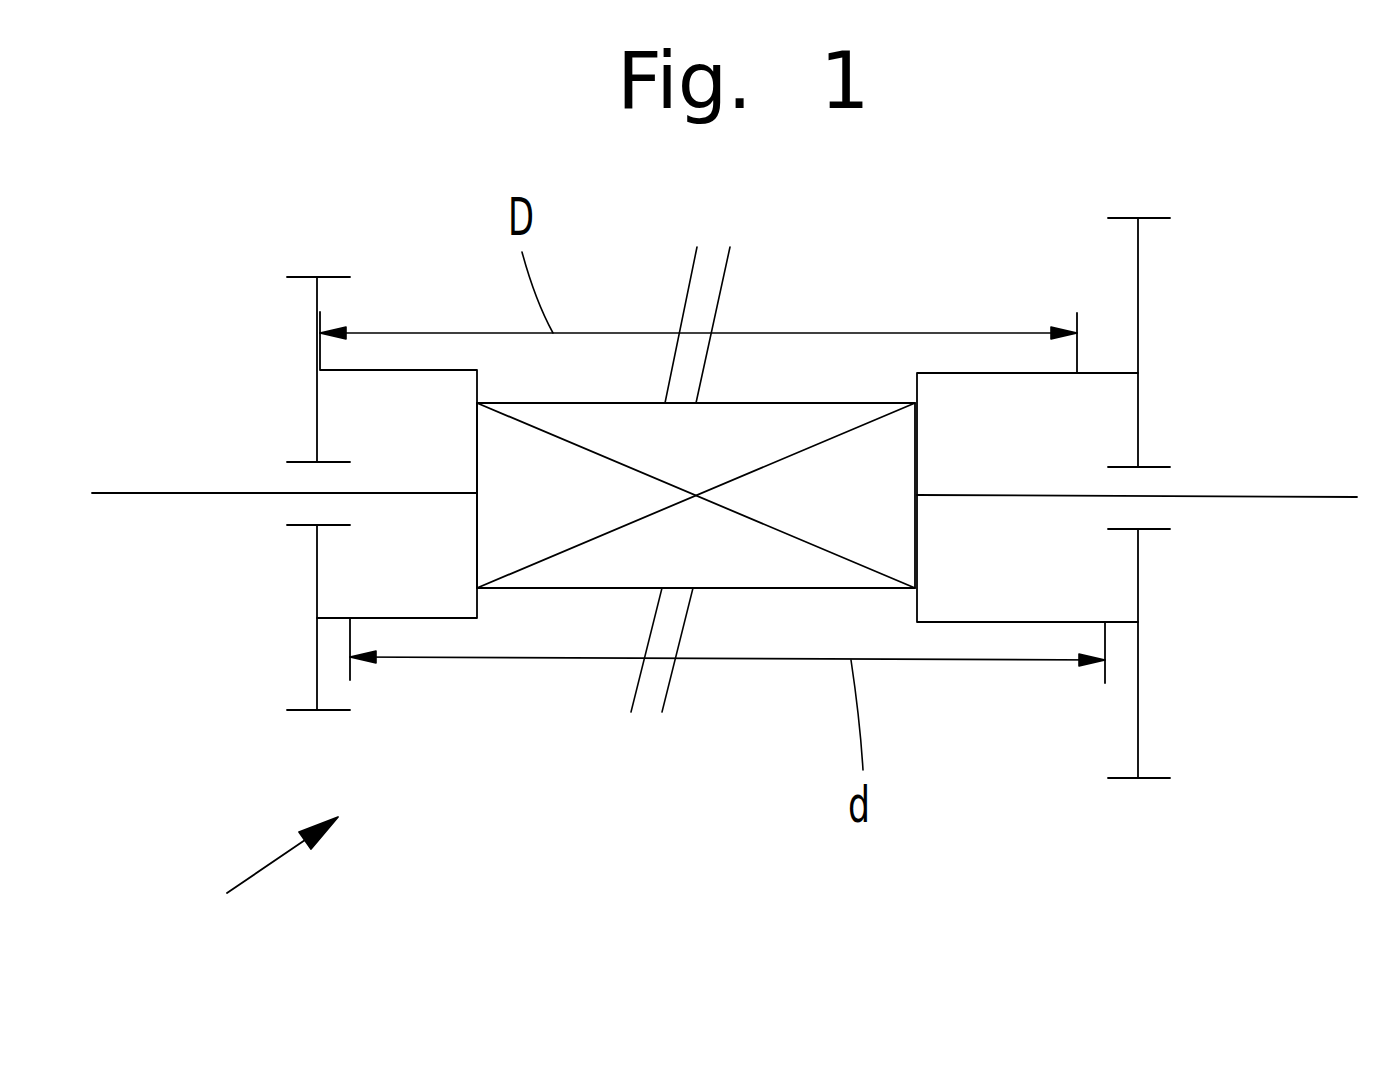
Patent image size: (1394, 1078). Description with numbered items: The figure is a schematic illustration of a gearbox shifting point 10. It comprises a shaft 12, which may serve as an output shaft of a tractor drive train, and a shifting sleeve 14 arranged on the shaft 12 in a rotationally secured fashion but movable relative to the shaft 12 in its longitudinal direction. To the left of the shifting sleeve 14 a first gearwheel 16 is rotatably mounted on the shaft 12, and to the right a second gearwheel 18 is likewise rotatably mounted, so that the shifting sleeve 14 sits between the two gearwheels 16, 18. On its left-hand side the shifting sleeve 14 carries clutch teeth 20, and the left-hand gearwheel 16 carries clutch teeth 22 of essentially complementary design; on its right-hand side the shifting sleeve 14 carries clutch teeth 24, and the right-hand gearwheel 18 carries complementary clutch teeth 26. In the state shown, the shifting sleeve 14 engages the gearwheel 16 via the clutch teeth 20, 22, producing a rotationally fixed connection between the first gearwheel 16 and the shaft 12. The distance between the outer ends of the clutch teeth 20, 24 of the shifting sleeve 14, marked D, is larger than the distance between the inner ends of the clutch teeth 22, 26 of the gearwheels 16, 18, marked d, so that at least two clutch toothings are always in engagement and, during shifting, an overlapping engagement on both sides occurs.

The gearbox shifting point 10 is at (255, 883).
The shaft 12 is at (1290, 498).
The shifting sleeve 14 is at (772, 650).
The first gearwheel 16 is at (317, 316).
The second gearwheel 18 is at (1139, 322).
The clutch teeth 20 is at (405, 618).
The clutch teeth 22 is at (335, 617).
The clutch teeth 24 is at (998, 622).
The clutch teeth 26 is at (1122, 372).